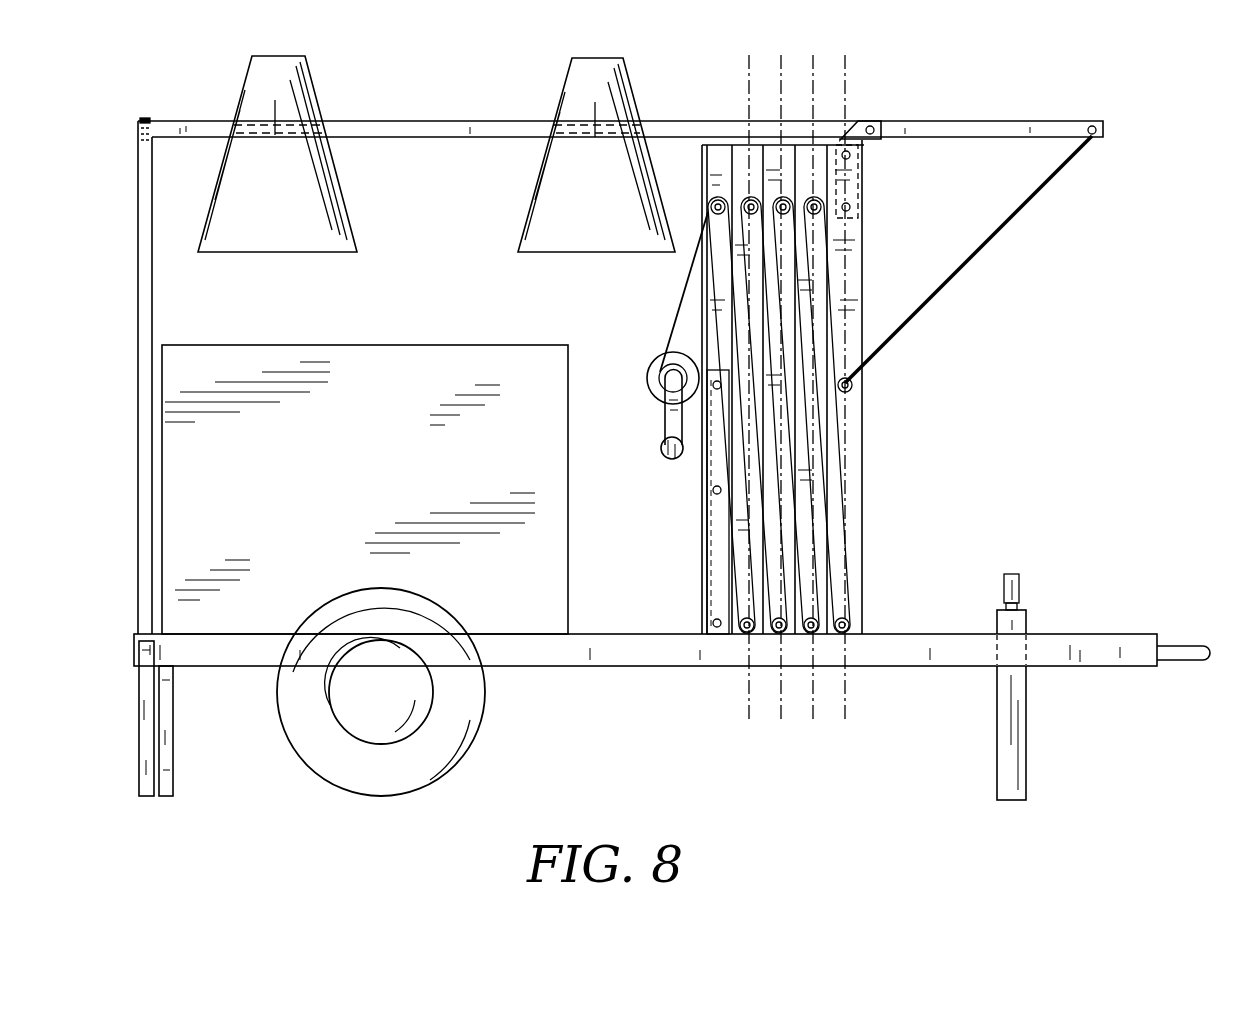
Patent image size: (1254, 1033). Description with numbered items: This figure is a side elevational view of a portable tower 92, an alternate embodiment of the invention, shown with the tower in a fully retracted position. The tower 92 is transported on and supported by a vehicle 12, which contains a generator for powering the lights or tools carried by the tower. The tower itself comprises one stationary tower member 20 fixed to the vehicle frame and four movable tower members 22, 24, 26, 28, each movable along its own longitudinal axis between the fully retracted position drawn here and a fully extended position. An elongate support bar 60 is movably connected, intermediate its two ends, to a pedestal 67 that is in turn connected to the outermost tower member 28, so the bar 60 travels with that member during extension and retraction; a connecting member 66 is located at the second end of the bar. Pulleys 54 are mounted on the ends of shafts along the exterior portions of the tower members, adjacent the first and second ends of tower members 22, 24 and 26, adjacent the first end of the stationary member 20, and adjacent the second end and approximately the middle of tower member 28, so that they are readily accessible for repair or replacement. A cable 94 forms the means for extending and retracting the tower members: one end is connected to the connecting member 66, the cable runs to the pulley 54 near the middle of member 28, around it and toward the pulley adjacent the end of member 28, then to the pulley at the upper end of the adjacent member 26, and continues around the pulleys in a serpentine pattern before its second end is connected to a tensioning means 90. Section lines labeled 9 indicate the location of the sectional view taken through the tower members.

The vehicle 12 is at (485, 310).
The elongate support bar 60 is at (395, 121).
The stationary tower member 20 is at (718, 145).
The movable tower member 22 is at (735, 145).
The movable tower member 24 is at (758, 145).
The movable tower member 26 is at (804, 145).
The movable tower member 28 is at (865, 407).
The pulley 54 is at (745, 634).
The pedestal 67 is at (875, 110).
The connecting member 66 is at (1092, 124).
The cable 94 is at (967, 257).
The portable tower 92 is at (1075, 288).
The tensioning means 90 is at (653, 395).
The section line for FIG. 9 is at (695, 148).